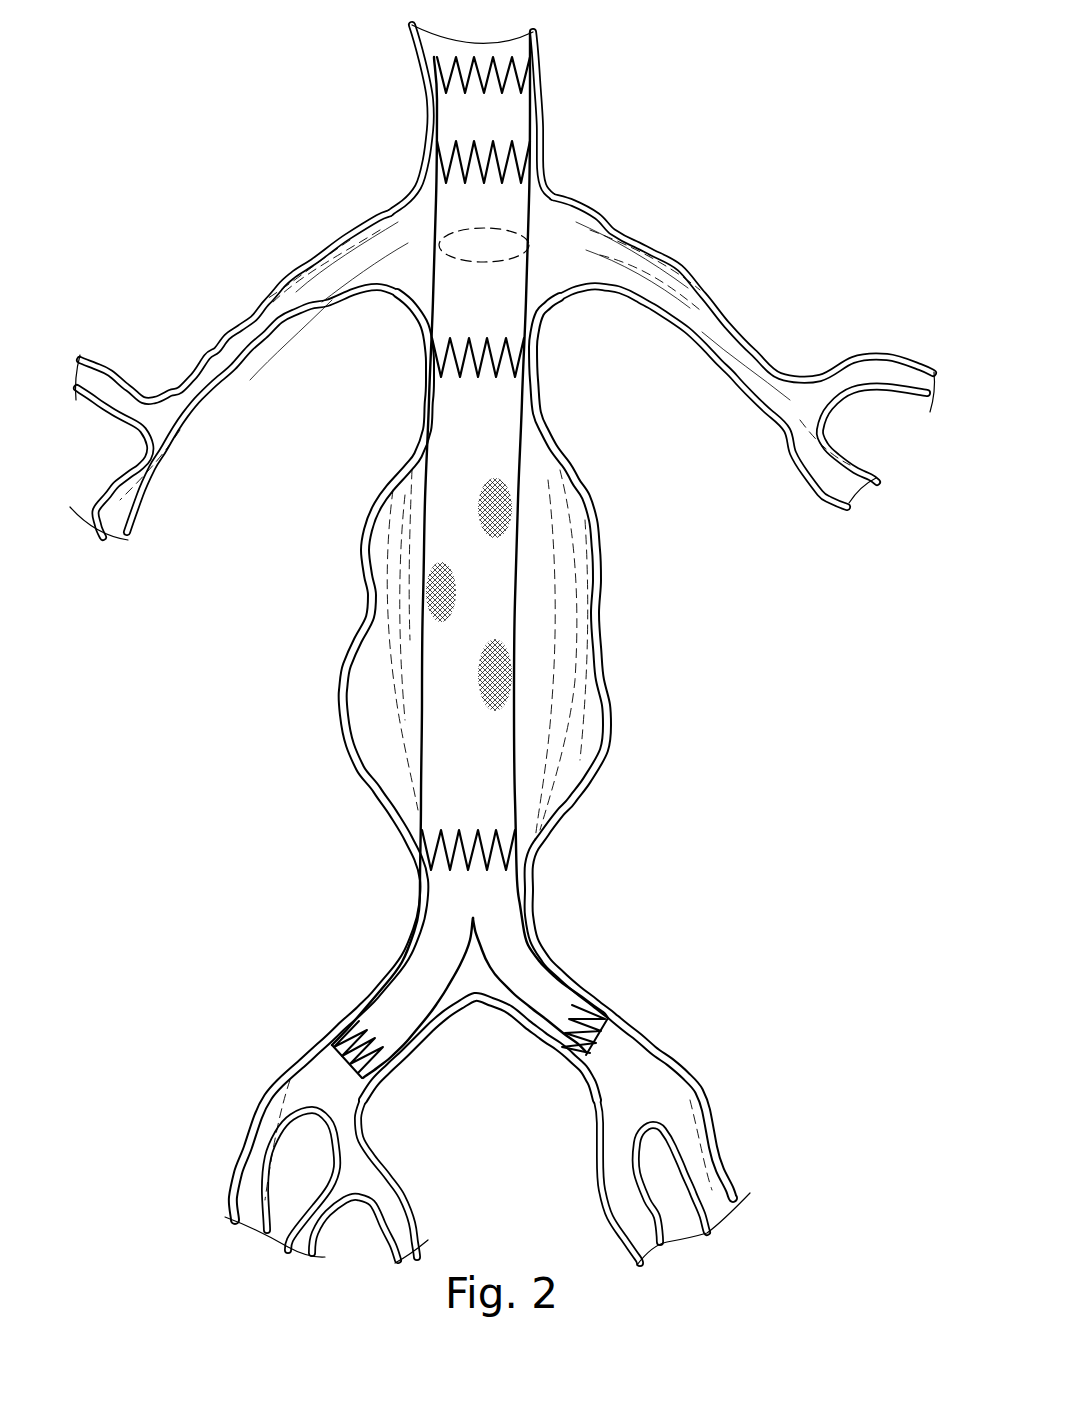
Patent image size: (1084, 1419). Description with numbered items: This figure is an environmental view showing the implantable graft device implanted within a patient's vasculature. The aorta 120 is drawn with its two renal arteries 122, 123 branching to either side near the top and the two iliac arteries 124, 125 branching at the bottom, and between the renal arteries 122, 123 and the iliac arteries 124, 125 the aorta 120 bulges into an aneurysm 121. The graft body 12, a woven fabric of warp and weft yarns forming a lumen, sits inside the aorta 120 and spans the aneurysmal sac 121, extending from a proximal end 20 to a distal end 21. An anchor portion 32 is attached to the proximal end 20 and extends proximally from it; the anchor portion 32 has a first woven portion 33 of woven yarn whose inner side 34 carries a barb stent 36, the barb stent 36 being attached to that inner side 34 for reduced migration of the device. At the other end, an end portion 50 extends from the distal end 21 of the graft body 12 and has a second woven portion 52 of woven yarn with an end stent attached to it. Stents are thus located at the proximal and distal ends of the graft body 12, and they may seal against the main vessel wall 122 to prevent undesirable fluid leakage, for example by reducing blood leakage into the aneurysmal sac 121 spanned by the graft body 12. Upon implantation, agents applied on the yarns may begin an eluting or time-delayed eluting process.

The graft body 12 is at (481, 542).
The proximal end 20 is at (410, 33).
The distal end 21 is at (413, 827).
The anchor portion 32 is at (475, 123).
The first woven portion 33 is at (477, 133).
The inner side 34 is at (553, 195).
The barb stent 36 is at (553, 23).
The end portion 50 is at (457, 902).
The second woven portion 52 is at (448, 920).
The aorta 120 is at (610, 532).
The aneurysm 121 is at (547, 643).
The renal artery 122 is at (560, 295).
The renal artery 123 is at (378, 270).
The iliac artery 124 is at (620, 1055).
The iliac artery 125 is at (327, 1046).